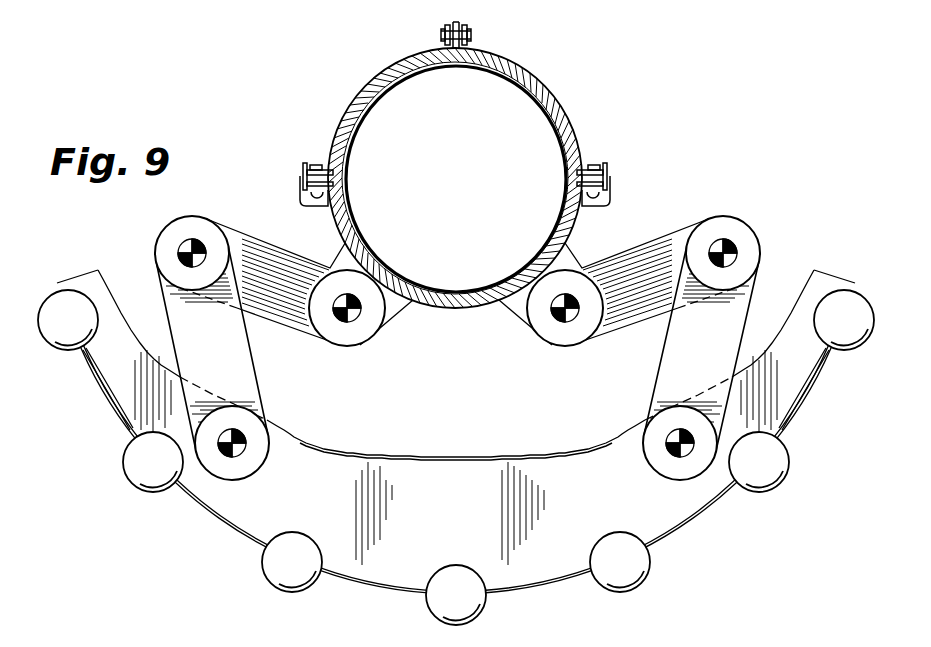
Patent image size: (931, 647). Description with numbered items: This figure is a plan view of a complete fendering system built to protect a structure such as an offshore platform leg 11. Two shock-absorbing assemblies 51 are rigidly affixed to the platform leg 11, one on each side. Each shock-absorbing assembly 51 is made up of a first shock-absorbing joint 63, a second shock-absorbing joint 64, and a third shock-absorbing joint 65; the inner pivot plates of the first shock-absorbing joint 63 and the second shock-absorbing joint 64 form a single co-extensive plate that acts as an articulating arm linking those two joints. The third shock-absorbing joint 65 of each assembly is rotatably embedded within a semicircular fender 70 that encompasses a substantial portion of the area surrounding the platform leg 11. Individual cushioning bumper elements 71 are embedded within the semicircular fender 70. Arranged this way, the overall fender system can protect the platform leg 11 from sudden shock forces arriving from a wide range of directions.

The platform leg 11 is at (557, 100).
The shock-absorbing assembly 51 is at (200, 215).
The first shock-absorbing joint 63 is at (532, 312).
The second shock-absorbing joint 64 is at (252, 352).
The third shock-absorbing joint 65 is at (220, 483).
The semicircular fender 70 is at (522, 592).
The cushioning bumper elements 71 is at (48, 345).